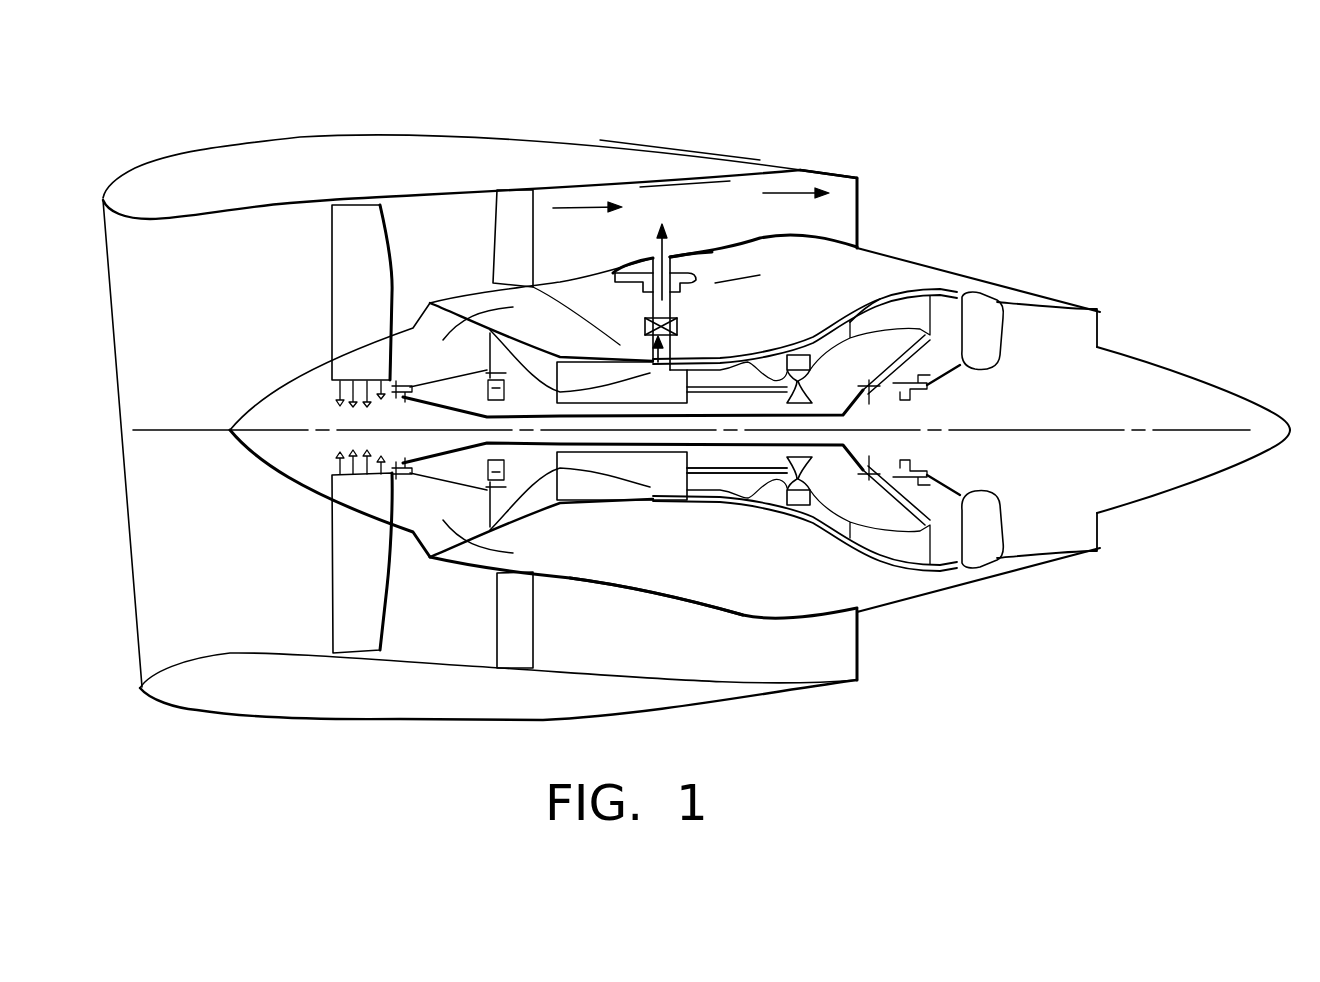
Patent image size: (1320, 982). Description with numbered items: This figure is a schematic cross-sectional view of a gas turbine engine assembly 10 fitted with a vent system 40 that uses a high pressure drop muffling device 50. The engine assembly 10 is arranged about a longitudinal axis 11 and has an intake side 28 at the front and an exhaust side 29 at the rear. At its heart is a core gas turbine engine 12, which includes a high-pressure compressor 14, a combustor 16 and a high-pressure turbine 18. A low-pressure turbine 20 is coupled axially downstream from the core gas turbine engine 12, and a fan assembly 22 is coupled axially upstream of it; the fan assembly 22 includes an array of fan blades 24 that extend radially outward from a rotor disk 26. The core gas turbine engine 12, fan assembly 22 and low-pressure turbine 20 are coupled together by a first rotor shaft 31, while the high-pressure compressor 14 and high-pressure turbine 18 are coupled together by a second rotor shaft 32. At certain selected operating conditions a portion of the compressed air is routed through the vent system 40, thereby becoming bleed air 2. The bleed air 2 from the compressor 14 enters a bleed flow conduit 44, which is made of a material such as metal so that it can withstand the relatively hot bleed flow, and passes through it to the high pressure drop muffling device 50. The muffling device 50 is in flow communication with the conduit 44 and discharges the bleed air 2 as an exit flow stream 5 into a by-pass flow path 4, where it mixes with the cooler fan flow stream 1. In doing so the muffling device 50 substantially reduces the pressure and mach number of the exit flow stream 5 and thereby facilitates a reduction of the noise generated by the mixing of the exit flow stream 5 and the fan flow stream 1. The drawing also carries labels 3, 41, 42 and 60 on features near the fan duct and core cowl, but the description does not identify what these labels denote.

The gas turbine engine assembly 10 is at (760, 97).
The fan flow stream 1 is at (578, 205).
The bleed air 2 is at (650, 370).
The fan nozzle 3 is at (800, 172).
The by-pass flow path 4 is at (627, 200).
The exit flow stream 5 is at (653, 252).
The longitudinal axis 11 is at (160, 430).
The core gas turbine engine 12 is at (764, 332).
The high-pressure compressor 14 is at (577, 367).
The combustor 16 is at (745, 335).
The high-pressure turbine 18 is at (790, 518).
The low-pressure turbine 20 is at (890, 300).
The fan assembly 22 is at (480, 313).
The fan blades 24 is at (350, 272).
The rotor disk 26 is at (360, 497).
The intake side 28 is at (84, 240).
The exhaust side 29 is at (905, 192).
The first rotor shaft 31 is at (567, 458).
The second rotor shaft 32 is at (797, 500).
The vent system 40 is at (712, 284).
The core cowl 41 is at (760, 238).
The fan duct outlet 42 is at (686, 193).
The bleed flow conduit 44 is at (650, 297).
The high pressure drop muffling device 50 is at (630, 256).
The fan exhaust flow 60 is at (676, 232).